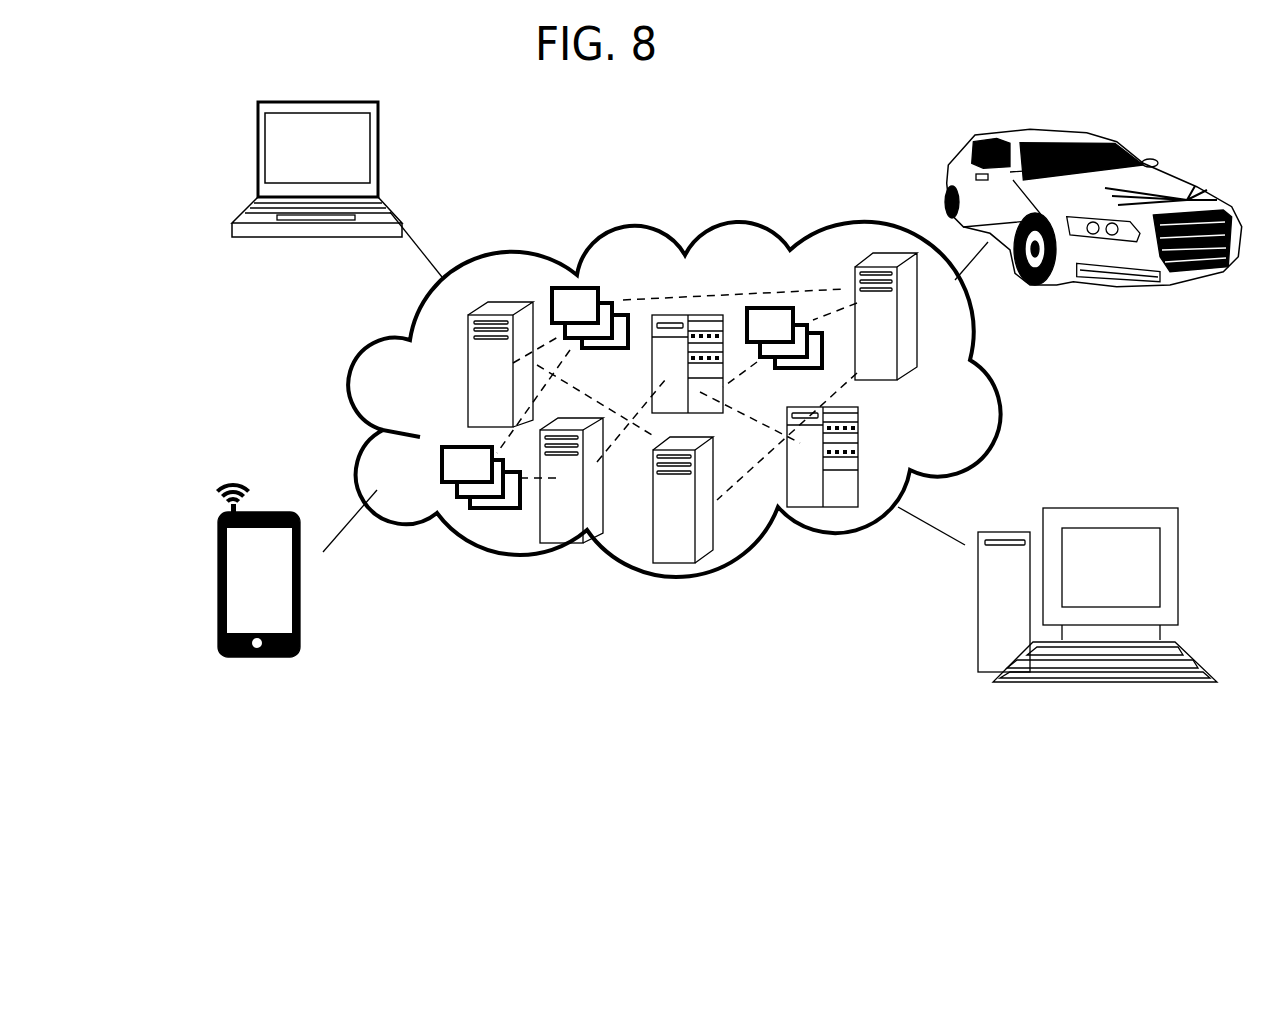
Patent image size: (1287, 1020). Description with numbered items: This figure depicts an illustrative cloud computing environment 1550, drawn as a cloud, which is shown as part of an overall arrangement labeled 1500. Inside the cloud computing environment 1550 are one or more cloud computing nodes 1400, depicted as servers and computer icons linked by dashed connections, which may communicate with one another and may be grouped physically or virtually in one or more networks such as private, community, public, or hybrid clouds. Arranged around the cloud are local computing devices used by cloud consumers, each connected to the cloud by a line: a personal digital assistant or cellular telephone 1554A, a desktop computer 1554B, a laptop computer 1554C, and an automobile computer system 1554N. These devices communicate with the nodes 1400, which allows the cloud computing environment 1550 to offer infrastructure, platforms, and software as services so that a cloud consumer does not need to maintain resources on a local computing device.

The networked system environment 1500 is at (1135, 72).
The cloud computing environment 1550 is at (1002, 385).
The cloud computing nodes 1400 is at (931, 412).
The personal digital assistant or cellular telephone 1554A is at (323, 613).
The desktop computer 1554B is at (1002, 598).
The laptop computer 1554C is at (388, 178).
The automobile computer system 1554N is at (938, 165).